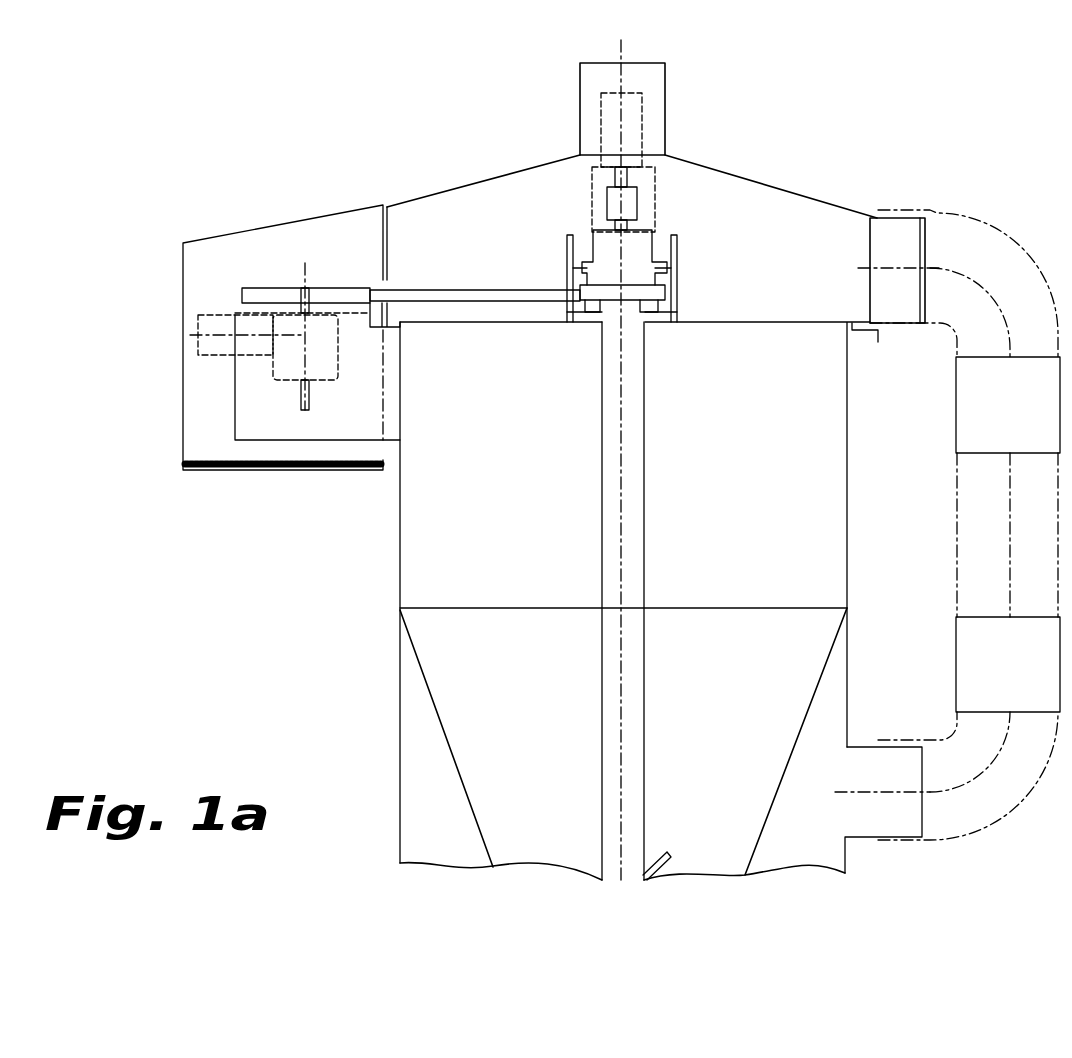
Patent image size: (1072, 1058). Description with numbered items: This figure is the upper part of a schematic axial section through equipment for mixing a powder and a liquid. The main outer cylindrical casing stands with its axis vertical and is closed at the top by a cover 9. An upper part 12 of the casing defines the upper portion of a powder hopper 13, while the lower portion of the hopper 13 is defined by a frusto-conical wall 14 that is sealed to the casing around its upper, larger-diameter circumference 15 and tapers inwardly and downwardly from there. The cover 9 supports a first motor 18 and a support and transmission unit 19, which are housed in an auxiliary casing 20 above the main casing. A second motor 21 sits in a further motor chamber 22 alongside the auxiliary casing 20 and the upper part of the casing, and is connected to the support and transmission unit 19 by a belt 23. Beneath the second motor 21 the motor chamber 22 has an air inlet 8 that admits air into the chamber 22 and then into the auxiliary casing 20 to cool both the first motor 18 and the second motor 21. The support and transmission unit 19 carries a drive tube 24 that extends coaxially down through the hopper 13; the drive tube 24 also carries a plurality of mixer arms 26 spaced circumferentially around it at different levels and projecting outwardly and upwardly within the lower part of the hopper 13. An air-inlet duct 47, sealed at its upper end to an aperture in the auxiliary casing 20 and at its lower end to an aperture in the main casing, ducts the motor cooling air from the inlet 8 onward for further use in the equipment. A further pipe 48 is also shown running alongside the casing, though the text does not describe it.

The air inlet 8 is at (323, 468).
The cover 9 is at (793, 257).
The upper part of the casing 12 is at (841, 383).
The powder hopper 13 is at (504, 636).
The frusto-conical wall 14 is at (435, 712).
The upper, larger-diameter circumference 15 is at (766, 602).
The first motor 18 is at (643, 136).
The support and transmission unit 19 is at (655, 243).
The auxiliary casing 20 is at (778, 176).
The second motor 21 is at (280, 362).
The motor chamber 22 is at (207, 231).
The belt 23 is at (346, 281).
The drive tube 24 is at (601, 482).
The mixer arms 26 is at (667, 850).
The air-inlet duct 47 is at (994, 829).
The supply pipe 48 is at (979, 210).